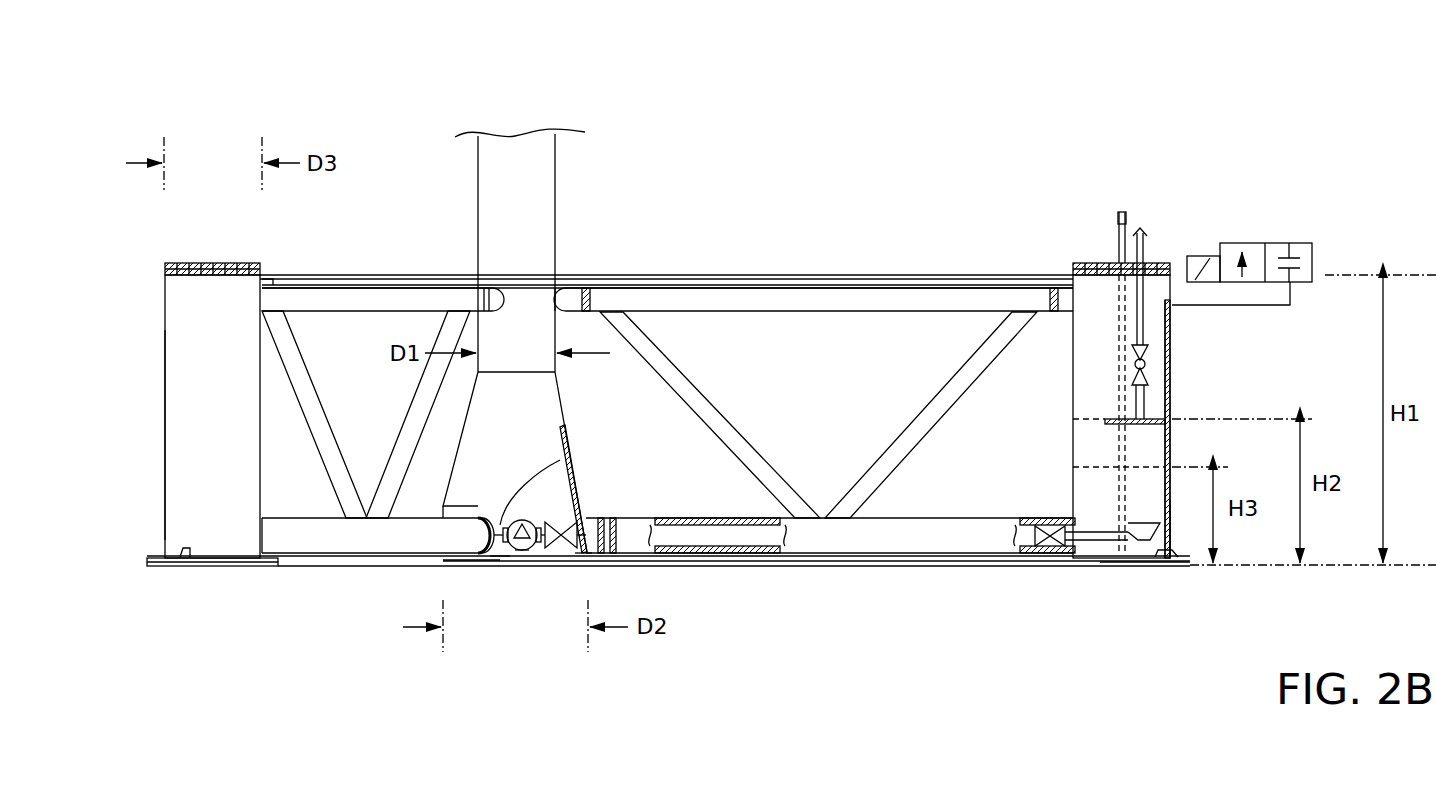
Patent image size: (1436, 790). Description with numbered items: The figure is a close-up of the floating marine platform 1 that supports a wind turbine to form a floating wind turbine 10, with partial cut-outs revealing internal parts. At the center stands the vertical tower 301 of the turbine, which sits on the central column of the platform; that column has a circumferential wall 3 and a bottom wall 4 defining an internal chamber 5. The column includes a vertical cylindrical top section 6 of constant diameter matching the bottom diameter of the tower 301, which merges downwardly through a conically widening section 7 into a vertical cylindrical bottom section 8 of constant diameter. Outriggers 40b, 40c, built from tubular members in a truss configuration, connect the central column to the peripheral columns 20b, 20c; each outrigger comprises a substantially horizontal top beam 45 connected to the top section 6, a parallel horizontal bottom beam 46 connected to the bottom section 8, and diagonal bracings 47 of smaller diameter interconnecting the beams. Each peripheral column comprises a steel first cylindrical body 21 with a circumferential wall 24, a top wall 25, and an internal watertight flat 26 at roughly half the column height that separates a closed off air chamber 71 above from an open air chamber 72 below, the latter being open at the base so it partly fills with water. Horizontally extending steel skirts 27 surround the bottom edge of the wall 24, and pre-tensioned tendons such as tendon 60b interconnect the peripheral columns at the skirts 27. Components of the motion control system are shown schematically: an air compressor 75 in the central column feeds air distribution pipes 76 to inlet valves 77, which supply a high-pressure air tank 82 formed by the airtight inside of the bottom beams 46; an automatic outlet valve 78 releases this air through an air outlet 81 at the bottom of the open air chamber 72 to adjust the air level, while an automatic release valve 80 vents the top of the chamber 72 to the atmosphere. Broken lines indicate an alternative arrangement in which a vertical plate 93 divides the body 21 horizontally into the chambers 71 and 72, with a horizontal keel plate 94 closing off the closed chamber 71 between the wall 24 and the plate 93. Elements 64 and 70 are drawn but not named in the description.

The floating wind turbine 10 is at (920, 132).
The floating marine platform 1 is at (164, 358).
The circumferential wall 3 is at (473, 430).
The bottom wall 4 is at (470, 566).
The internal chamber 5 is at (552, 492).
The vertical cylindrical top section 6 is at (553, 330).
The conically widening section 7 is at (557, 438).
The vertical cylindrical bottom section 8 is at (500, 576).
The peripheral column 20b is at (1073, 403).
The peripheral column 20c is at (168, 316).
The first cylindrical body 21 is at (173, 427).
The circumferential wall 24 is at (165, 466).
The top wall 25 is at (1090, 262).
The watertight flat 26 is at (1160, 421).
The skirt 27 is at (150, 561).
The outrigger 40b is at (945, 301).
The outrigger 40c is at (342, 298).
The top beam 45 is at (832, 297).
The bottom beam 46 is at (943, 535).
The diagonal bracing 47 is at (895, 443).
The tendon 60b is at (825, 563).
The upper beam plate 64 is at (895, 280).
The pump 70 is at (502, 520).
The closed off air chamber 71 is at (1089, 335).
The open air chamber 72 is at (1133, 505).
The air compressor 75 is at (517, 551).
The air distribution pipe 76 is at (580, 561).
The inlet valve 77 is at (550, 518).
The automatic outlet valve 78 is at (1022, 571).
The automatic release valve 80 is at (1157, 360).
The air outlet 81 is at (1145, 403).
The high-pressure air tank 82 is at (708, 546).
The vertical plate 93 is at (1123, 288).
The horizontal keel plate 94 is at (1090, 574).
The tower 301 is at (549, 200).